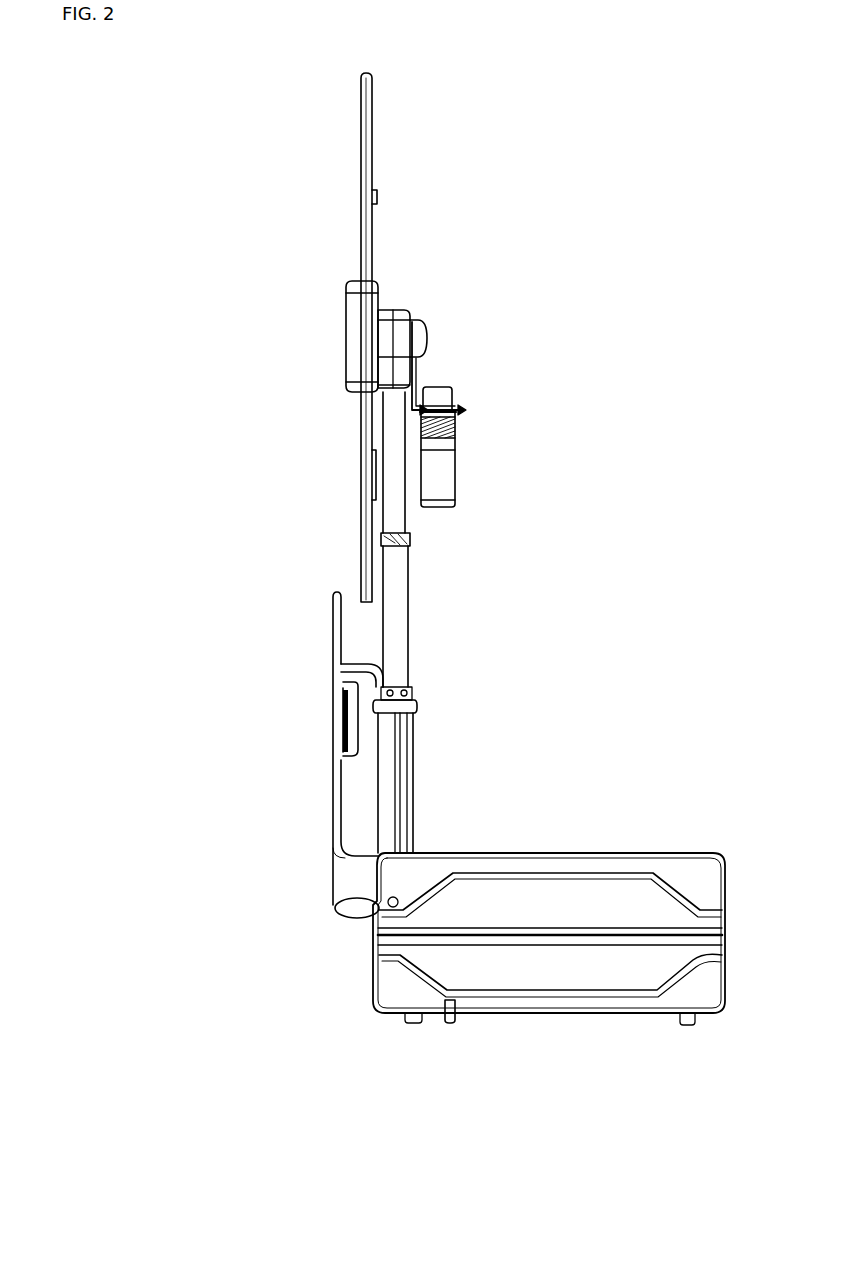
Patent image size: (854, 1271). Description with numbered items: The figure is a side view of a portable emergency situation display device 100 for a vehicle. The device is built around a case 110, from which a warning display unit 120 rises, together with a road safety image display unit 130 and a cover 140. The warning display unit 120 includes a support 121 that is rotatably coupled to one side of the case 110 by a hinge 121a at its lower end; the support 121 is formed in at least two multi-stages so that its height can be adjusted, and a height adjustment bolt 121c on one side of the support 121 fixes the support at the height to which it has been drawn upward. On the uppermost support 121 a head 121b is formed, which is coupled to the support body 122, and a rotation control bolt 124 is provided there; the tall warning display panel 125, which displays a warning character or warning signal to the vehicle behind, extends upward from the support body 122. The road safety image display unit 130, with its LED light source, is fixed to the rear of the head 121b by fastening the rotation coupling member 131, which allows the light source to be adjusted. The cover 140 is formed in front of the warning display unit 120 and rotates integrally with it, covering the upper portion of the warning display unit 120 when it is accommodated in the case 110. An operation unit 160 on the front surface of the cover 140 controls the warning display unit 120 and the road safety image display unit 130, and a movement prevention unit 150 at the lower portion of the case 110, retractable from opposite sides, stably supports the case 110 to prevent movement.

The portable emergency situation display device 100 is at (320, 486).
The case 110 is at (555, 962).
The warning display unit 120 is at (338, 294).
The support 121 is at (409, 610).
The hinge 121a is at (388, 903).
The head 121b is at (404, 311).
The height adjustment bolt 121c is at (411, 538).
The support body 122 is at (356, 340).
The rotation control bolt 124 is at (427, 337).
The warning display panel 125 is at (361, 151).
The road safety image display unit 130 is at (438, 470).
The rotation coupling member 131 is at (416, 360).
The cover 140 is at (333, 793).
The movement prevention unit 150 is at (450, 1024).
The operation unit 160 is at (335, 712).